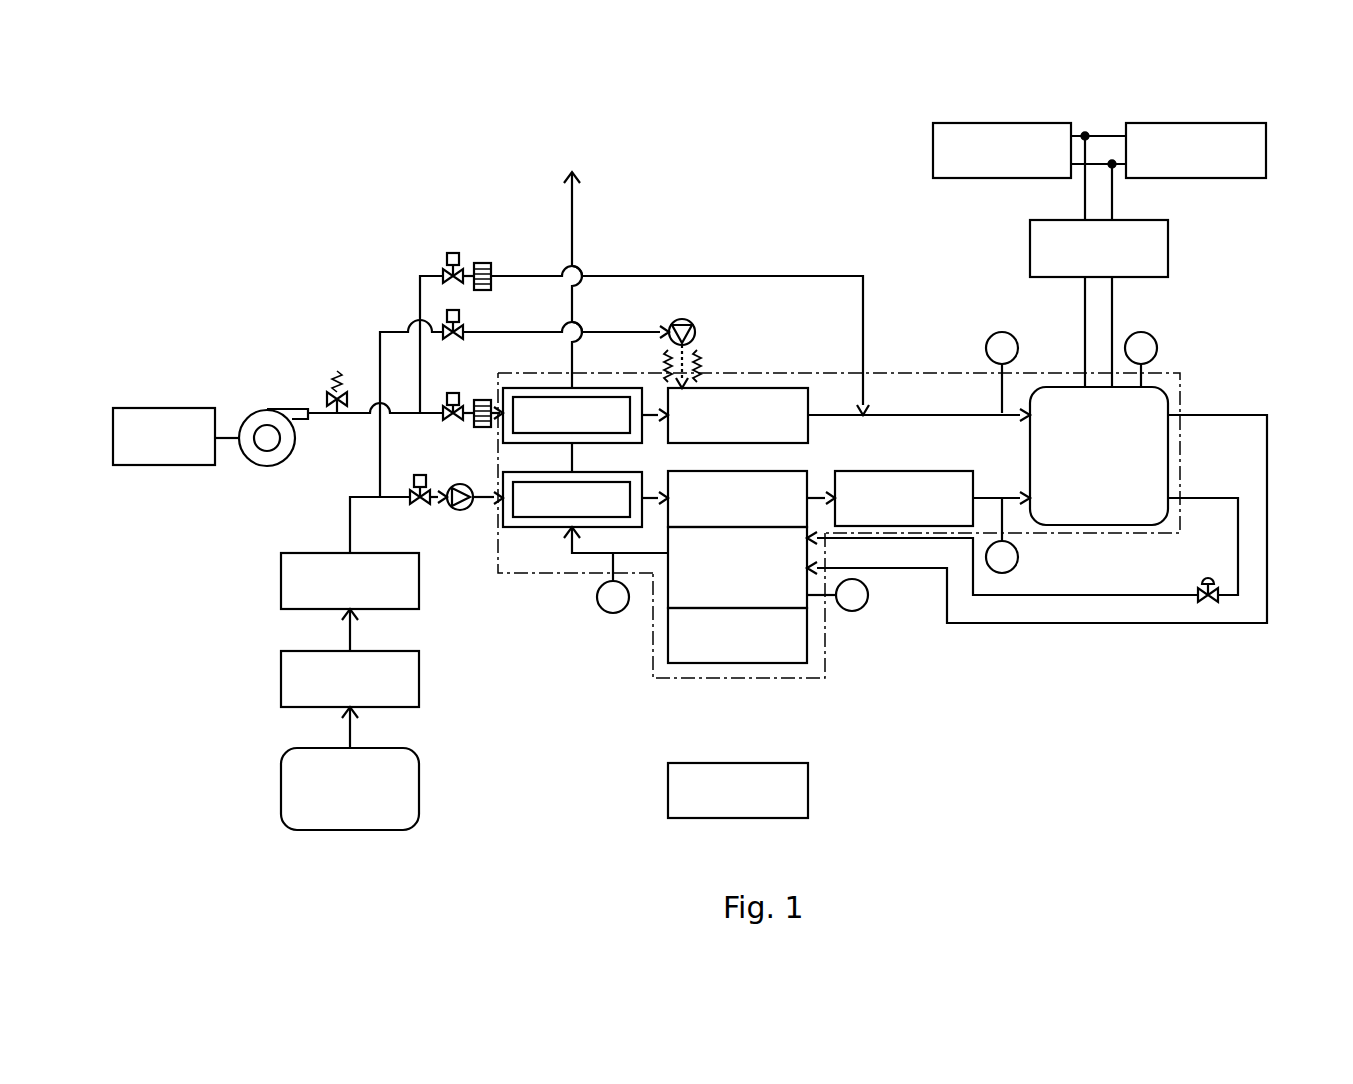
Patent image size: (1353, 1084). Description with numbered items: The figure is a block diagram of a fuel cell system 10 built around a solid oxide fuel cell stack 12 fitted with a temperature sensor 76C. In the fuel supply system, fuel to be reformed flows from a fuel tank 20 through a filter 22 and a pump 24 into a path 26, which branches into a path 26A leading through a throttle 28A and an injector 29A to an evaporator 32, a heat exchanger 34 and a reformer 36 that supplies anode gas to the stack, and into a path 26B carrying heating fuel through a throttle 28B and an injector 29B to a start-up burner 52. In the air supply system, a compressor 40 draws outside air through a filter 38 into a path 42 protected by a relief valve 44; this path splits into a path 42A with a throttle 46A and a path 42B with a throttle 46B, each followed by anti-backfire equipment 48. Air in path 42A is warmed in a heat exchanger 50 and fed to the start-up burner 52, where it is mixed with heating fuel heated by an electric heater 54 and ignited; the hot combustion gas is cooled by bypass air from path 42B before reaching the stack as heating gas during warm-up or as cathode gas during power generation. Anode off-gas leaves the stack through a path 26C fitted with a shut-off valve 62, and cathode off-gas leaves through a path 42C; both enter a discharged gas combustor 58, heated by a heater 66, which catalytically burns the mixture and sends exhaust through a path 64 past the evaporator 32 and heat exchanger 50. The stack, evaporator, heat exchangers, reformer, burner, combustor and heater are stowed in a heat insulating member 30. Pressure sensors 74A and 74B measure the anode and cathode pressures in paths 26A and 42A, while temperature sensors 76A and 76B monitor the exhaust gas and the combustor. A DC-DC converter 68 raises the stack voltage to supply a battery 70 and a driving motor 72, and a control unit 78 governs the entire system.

The fuel cell system 10 is at (747, 138).
The fuel cell stack 12 is at (1088, 511).
The fuel tank 20 is at (280, 791).
The filter 22 is at (280, 678).
The pump 24 is at (280, 581).
The path 26 is at (348, 518).
The path 26A is at (473, 490).
The path 26B is at (378, 340).
The path 26C is at (1118, 598).
The throttle 28A is at (424, 507).
The throttle 28B is at (462, 318).
The injector 29A is at (463, 512).
The injector 29B is at (690, 320).
The heat insulating member 30 is at (900, 371).
The evaporator 32 is at (527, 528).
The heat exchanger 34 is at (808, 471).
The reformer 36 is at (913, 470).
The filter 38 is at (175, 467).
The compressor 40 is at (268, 467).
The path 42 is at (320, 416).
The path 42A is at (423, 400).
The path 42B is at (628, 275).
The path 42C is at (1241, 414).
The relief valve 44 is at (330, 384).
The throttle 46A is at (446, 418).
The throttle 46B is at (445, 257).
The anti-backfire equipment 48 is at (491, 266).
The heat exchanger 50 is at (530, 387).
The start-up burner 52 is at (763, 387).
The electric heater 54 is at (664, 354).
The discharged gas combustor 58 is at (668, 597).
The shut-off valve 62 is at (1201, 604).
The path 64 is at (570, 200).
The heater 66 is at (730, 678).
The DC-DC converter 68 is at (1168, 252).
The battery 70 is at (932, 148).
The driving motor 72 is at (1245, 178).
The pressure sensor 74A is at (1019, 556).
The pressure sensor 74B is at (1019, 349).
The temperature sensor 76A is at (604, 609).
The temperature sensor 76B is at (852, 612).
The temperature sensor 76C is at (1158, 349).
The control unit 78 is at (667, 790).